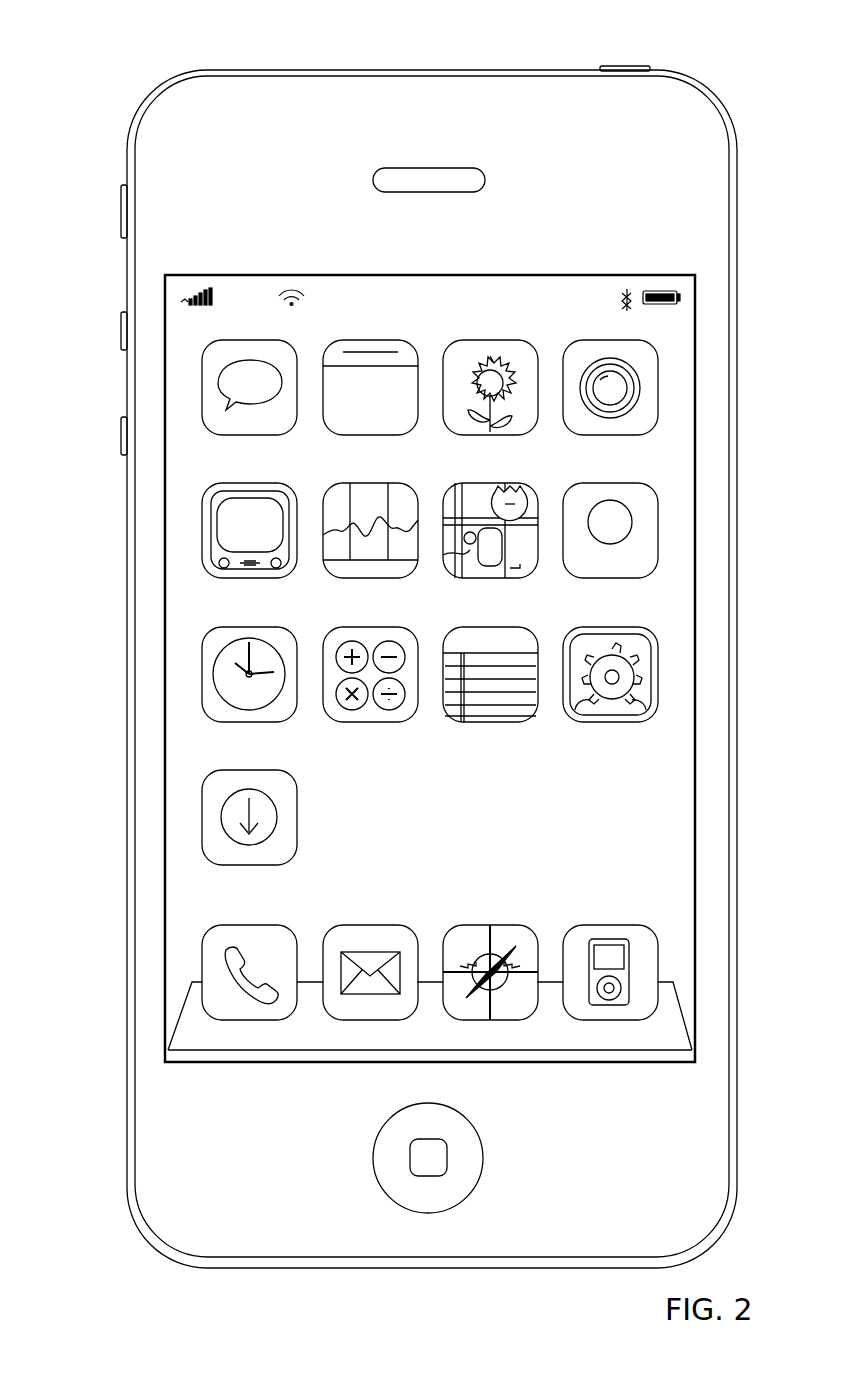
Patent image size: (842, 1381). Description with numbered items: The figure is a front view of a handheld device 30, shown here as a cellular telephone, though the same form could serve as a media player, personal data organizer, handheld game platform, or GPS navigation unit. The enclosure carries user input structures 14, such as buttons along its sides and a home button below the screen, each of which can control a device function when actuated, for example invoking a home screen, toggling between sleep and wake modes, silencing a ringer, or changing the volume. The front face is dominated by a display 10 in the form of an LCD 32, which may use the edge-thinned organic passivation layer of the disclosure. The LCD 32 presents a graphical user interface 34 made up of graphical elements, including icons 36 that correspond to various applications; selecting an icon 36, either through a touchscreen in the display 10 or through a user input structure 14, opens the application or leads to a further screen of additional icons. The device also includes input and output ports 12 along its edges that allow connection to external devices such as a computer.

The display 10 is at (673, 452).
The input and output (I/O) ports 12 is at (263, 70).
The user input structures 14 is at (615, 70).
The handheld device 30 is at (226, 30).
The LCD 32 is at (678, 792).
The graphical user interface (GUI) 34 is at (185, 617).
The icons 36 is at (373, 340).